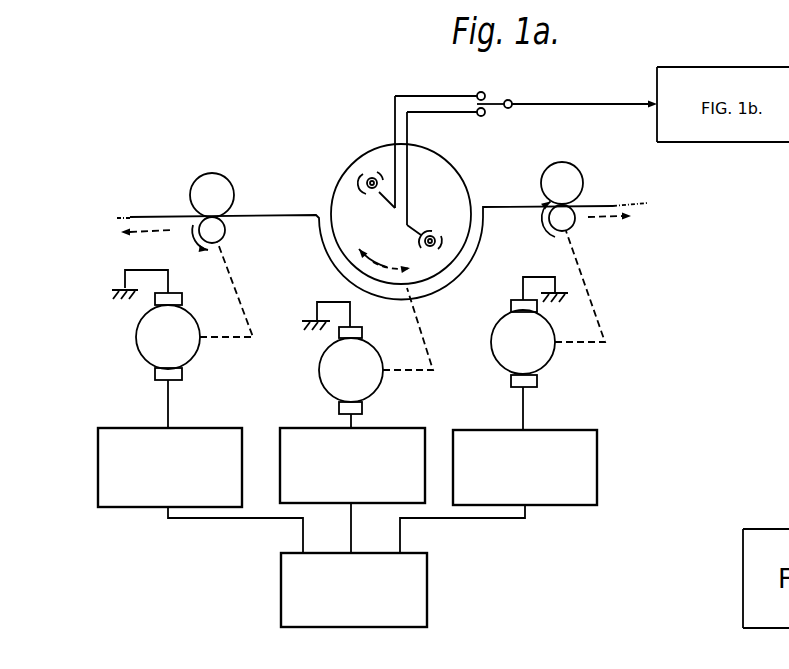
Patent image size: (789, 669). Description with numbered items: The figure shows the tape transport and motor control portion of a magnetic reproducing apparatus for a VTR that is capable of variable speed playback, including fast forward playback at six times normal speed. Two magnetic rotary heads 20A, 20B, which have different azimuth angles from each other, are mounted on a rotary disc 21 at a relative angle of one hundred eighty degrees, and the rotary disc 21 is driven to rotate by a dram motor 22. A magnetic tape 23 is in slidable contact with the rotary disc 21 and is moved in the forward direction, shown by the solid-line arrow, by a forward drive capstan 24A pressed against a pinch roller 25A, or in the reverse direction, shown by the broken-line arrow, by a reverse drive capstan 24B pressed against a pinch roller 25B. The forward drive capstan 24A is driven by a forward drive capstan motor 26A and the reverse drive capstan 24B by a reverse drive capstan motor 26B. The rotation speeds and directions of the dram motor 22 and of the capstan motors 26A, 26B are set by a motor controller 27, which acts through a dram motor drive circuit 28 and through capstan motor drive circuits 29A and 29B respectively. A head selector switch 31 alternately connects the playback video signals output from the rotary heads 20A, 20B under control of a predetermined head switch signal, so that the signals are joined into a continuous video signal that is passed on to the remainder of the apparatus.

The magnetic rotary head 20A is at (438, 243).
The magnetic rotary head 20B is at (356, 183).
The rotary disc 21 is at (452, 170).
The dram motor 22 is at (320, 368).
The magnetic tape 23 is at (309, 226).
The forward drive capstan 24A is at (572, 228).
The reverse drive capstan 24B is at (225, 235).
The pinch roller 25A is at (581, 173).
The pinch roller 25B is at (222, 175).
The forward drive capstan motor 26A is at (552, 360).
The reverse drive capstan motor 26B is at (137, 336).
The motor controller 27 is at (282, 627).
The dram motor drive circuit 28 is at (423, 428).
The capstan motor drive circuit 29A is at (598, 430).
The capstan motor drive circuit 29B is at (110, 507).
The head selector switch 31 is at (492, 100).